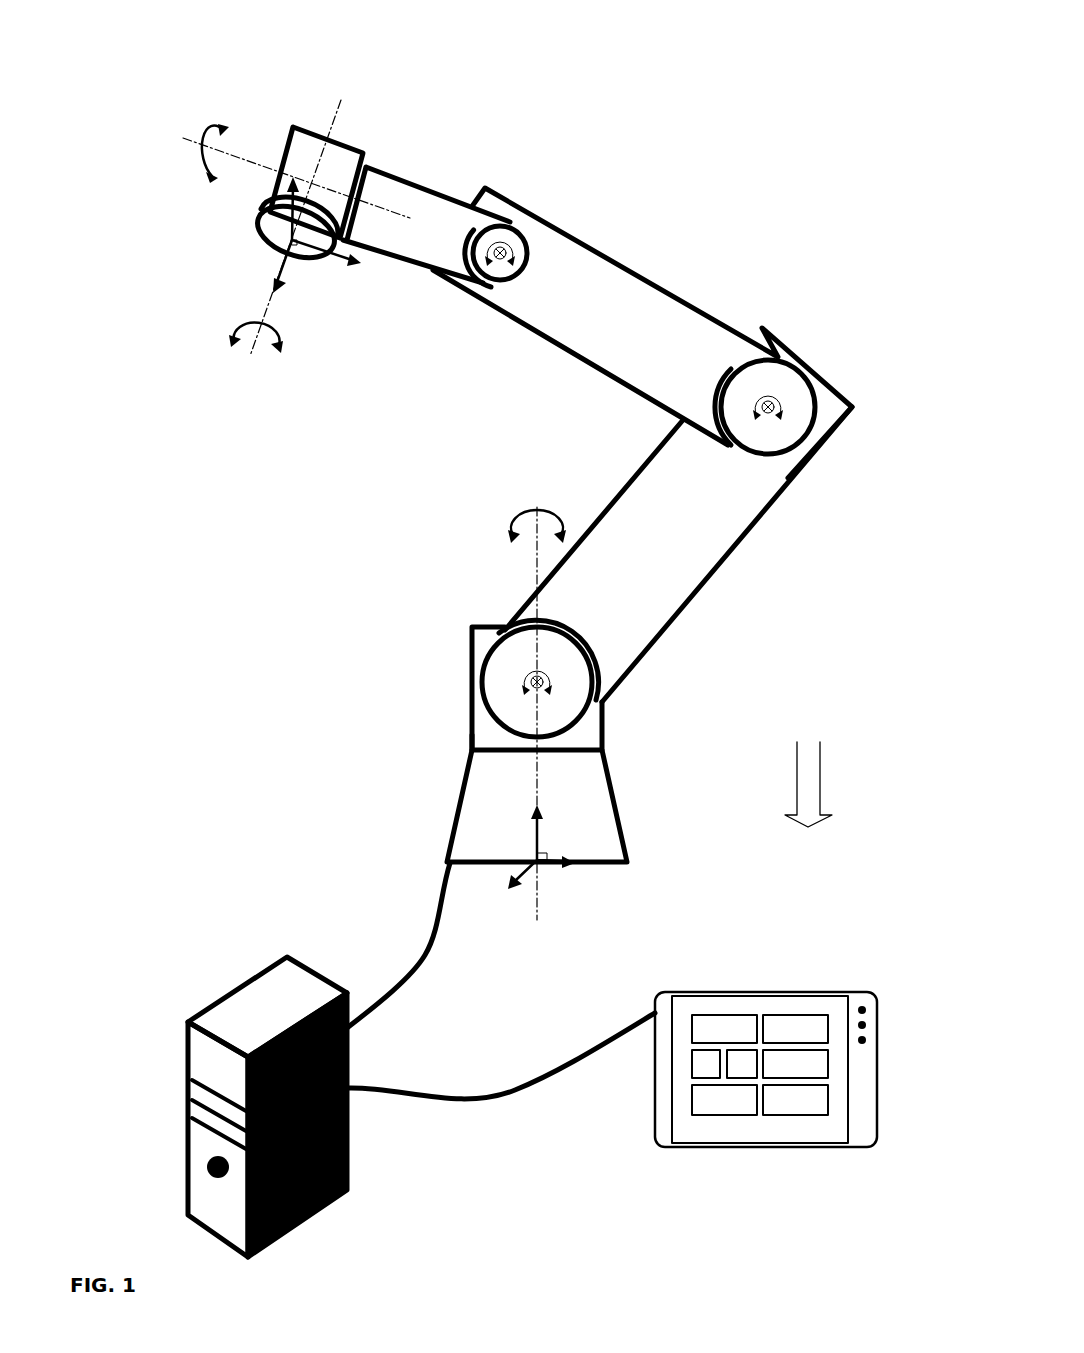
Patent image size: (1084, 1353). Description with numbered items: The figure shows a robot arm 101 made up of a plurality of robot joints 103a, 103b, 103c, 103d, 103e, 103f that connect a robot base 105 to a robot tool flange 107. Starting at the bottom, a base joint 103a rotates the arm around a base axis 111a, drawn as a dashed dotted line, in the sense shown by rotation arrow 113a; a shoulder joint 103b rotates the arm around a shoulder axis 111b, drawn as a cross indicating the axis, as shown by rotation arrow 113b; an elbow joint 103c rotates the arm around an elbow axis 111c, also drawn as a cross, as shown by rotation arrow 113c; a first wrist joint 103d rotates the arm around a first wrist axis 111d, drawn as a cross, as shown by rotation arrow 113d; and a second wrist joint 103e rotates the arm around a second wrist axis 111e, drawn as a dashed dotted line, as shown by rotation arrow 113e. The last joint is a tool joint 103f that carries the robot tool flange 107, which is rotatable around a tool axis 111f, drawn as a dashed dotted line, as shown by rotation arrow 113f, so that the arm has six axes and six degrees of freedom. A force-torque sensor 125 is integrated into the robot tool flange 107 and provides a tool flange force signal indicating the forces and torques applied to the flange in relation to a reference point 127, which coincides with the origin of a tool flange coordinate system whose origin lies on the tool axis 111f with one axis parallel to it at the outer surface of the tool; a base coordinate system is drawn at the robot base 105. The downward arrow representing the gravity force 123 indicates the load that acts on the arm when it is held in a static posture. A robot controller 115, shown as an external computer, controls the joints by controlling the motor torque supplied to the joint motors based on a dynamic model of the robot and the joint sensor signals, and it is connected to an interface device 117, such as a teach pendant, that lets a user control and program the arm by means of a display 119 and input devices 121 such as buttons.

The robot arm 101 is at (790, 56).
The base joint 103a is at (470, 735).
The shoulder joint 103b is at (490, 653).
The elbow joint 103c is at (805, 387).
The first wrist joint 103d is at (530, 238).
The second wrist joint 103e is at (367, 167).
The tool joint 103f is at (293, 127).
The robot base 105 is at (462, 820).
The robot tool flange 107 is at (273, 237).
The base axis 111a is at (535, 560).
The shoulder axis 111b is at (550, 678).
The elbow axis 111c is at (772, 412).
The first wrist axis 111d is at (507, 245).
The second wrist axis 111e is at (195, 140).
The tool axis 111f is at (250, 348).
The rotation arrow 113a is at (527, 518).
The rotation arrow 113b is at (547, 688).
The rotation arrow 113c is at (782, 405).
The rotation arrow 113d is at (500, 245).
The rotation arrow 113e is at (218, 128).
The rotation arrow 113f is at (245, 325).
The robot controller 115 is at (263, 1010).
The interface device 117 is at (739, 1078).
The display 119 is at (723, 993).
The input devices 121 is at (862, 1006).
The gravity force 123 is at (808, 783).
The force-torque sensor 125 is at (257, 212).
The reference point 127 is at (295, 243).